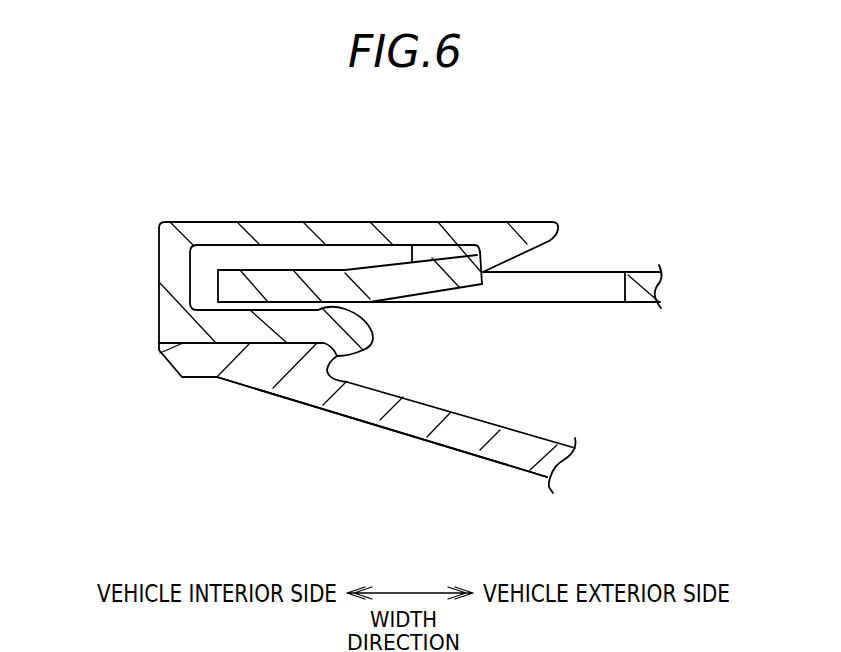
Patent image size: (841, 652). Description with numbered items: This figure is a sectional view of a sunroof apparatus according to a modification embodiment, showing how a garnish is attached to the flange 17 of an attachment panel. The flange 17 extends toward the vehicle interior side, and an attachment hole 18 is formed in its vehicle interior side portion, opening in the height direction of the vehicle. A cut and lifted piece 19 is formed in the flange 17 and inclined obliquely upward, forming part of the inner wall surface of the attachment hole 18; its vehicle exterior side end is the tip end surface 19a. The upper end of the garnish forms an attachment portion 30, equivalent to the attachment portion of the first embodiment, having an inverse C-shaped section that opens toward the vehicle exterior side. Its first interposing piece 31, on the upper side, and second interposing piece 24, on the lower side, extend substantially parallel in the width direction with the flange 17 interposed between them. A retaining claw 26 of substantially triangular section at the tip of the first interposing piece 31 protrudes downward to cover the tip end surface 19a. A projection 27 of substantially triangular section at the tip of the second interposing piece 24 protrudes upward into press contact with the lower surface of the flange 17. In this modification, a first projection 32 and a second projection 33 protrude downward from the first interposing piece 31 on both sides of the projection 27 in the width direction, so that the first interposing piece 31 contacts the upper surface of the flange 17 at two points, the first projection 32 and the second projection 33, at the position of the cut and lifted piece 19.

The attachment portion 30 is at (160, 270).
The first interposing piece 31 is at (275, 233).
The first projection 32 is at (212, 244).
The projection 27 is at (320, 300).
The second projection 33 is at (395, 245).
The retaining claw 26 is at (545, 268).
The cut and lifted piece 19 is at (357, 256).
The tip end surface 19a is at (485, 285).
The attachment hole 18 is at (622, 290).
The flange 17 is at (643, 302).
The second interposing piece 24 is at (266, 332).